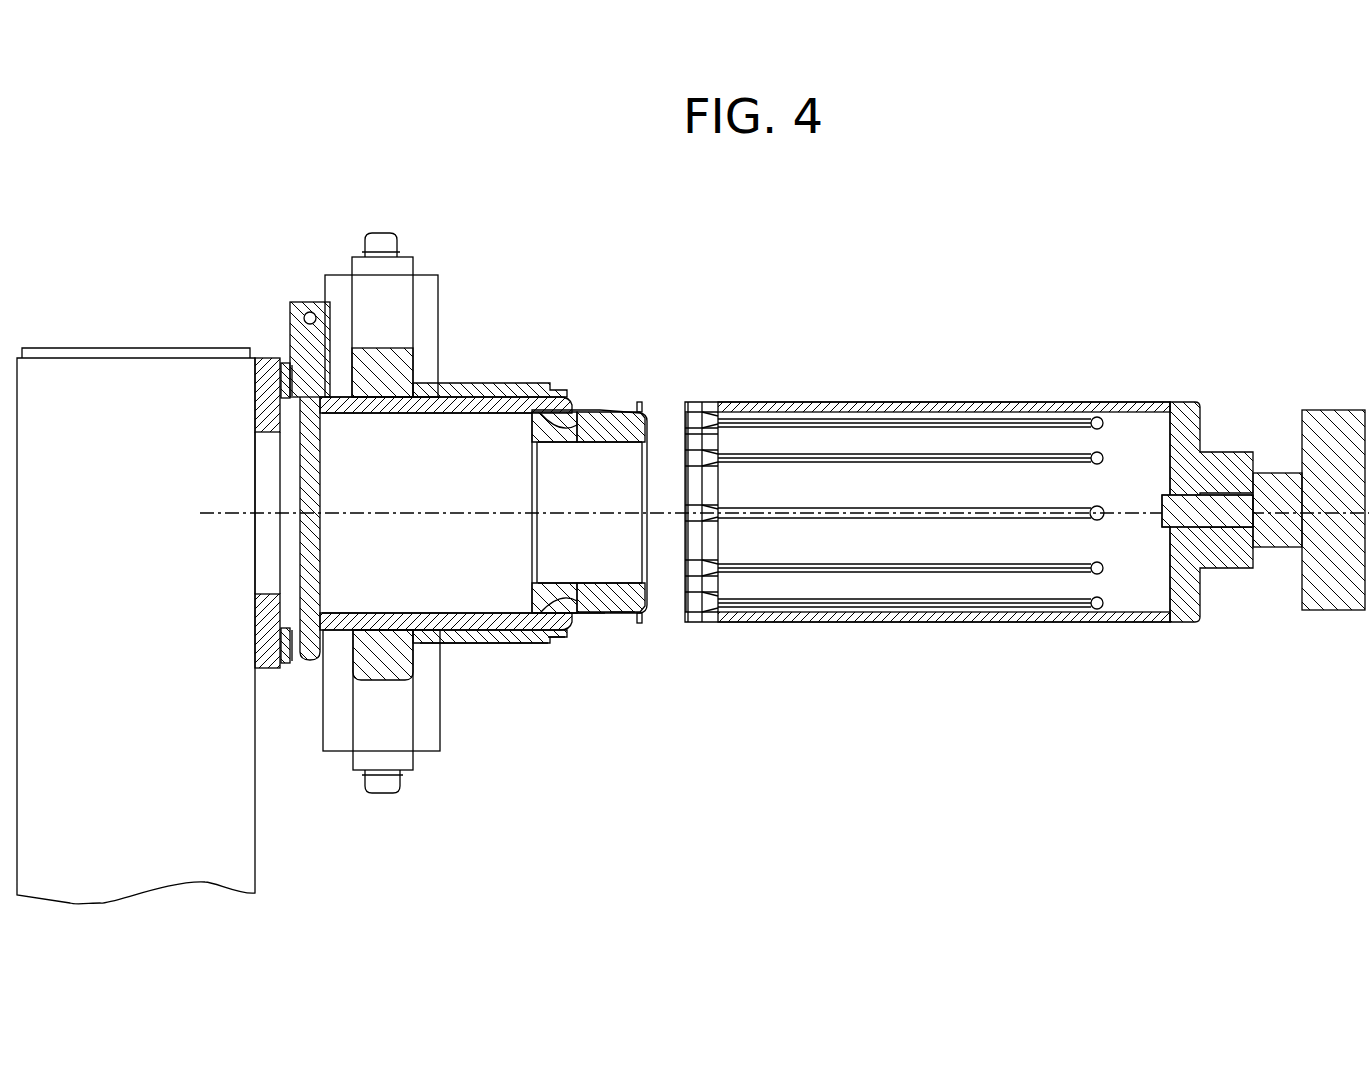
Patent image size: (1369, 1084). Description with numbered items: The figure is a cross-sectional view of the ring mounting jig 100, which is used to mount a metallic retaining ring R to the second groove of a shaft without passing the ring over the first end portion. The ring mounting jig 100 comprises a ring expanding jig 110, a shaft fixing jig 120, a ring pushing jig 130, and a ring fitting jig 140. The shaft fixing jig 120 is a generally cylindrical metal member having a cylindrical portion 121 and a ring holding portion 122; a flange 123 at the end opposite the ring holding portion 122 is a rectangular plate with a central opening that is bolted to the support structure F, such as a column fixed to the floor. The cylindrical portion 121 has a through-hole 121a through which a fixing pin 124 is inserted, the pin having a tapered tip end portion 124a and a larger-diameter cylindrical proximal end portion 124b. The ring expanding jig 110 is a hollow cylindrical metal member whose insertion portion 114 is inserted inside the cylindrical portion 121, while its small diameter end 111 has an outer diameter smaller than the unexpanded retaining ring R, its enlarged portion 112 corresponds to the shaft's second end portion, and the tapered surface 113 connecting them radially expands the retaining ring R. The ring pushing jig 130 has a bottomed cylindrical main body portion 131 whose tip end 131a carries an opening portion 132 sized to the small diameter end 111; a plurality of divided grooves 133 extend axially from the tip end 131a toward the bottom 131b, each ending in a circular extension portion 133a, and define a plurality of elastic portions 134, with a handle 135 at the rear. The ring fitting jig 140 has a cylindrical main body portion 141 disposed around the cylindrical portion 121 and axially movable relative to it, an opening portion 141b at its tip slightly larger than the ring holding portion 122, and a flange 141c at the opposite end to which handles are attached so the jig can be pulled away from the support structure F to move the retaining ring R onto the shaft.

The ring mounting jig 100 is at (722, 308).
The support structure F is at (110, 375).
The ring expanding jig 110 is at (607, 402).
The small diameter end 111 is at (643, 623).
The enlarged portion 112 is at (590, 614).
The tapered surface 113 is at (620, 613).
The insertion portion 114 is at (546, 643).
The shaft fixing jig 120 is at (498, 390).
The cylindrical portion 121 is at (503, 630).
The through-hole 121a is at (319, 415).
The ring holding portion 122 is at (575, 612).
The flange 123 is at (266, 357).
The fixing pin 124 is at (298, 468).
The tip end portion 124a is at (303, 661).
The proximal end portion 124b is at (302, 302).
The ring pushing jig 130 is at (1156, 391).
The main body portion 131 is at (888, 399).
The tip end 131a is at (683, 420).
The bottom 131b is at (1192, 432).
The opening portion 132 is at (683, 483).
The divided grooves 133 is at (850, 498).
The extension portion 133a is at (1105, 456).
The elastic portions 134 is at (1030, 487).
The handle 135 is at (1328, 410).
The ring fitting jig 140 is at (475, 381).
The main body portion 141 is at (470, 641).
The opening portion 141b is at (560, 428).
The flange 141c is at (385, 350).
The retaining ring R is at (639, 401).